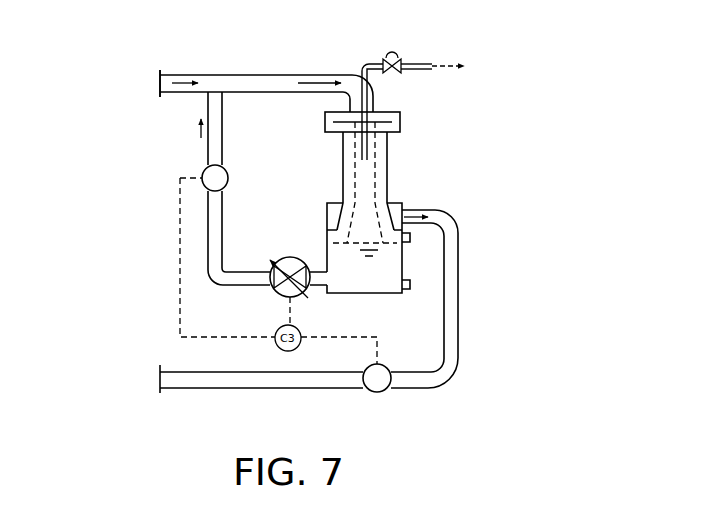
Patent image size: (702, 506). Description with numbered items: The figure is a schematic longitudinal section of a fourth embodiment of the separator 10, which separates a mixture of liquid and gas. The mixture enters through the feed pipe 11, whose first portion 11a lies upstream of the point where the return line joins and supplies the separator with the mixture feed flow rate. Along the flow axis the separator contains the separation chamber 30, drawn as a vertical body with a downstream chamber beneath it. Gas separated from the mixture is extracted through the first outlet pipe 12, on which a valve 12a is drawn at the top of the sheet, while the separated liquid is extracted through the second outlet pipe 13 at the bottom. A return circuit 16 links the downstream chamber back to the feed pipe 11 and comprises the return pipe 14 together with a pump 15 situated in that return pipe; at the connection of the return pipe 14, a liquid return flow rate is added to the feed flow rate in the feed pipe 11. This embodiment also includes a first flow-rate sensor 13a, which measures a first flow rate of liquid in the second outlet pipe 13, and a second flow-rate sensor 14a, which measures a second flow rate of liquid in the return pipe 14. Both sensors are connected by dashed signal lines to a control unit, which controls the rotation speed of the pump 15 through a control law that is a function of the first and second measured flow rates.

The separator 10 is at (459, 161).
The feed pipe 11 is at (265, 75).
The first portion of the feed pipe 11a is at (180, 74).
The first outlet pipe 12 is at (418, 63).
The valve 12a is at (385, 62).
The second outlet pipe 13 is at (197, 389).
The first flow-rate sensor 13a is at (381, 391).
The return pipe 14 is at (222, 132).
The second flow-rate sensor 14a is at (228, 173).
The pump 15 is at (284, 257).
The return circuit 16 is at (138, 176).
The separation chamber 30 is at (378, 161).